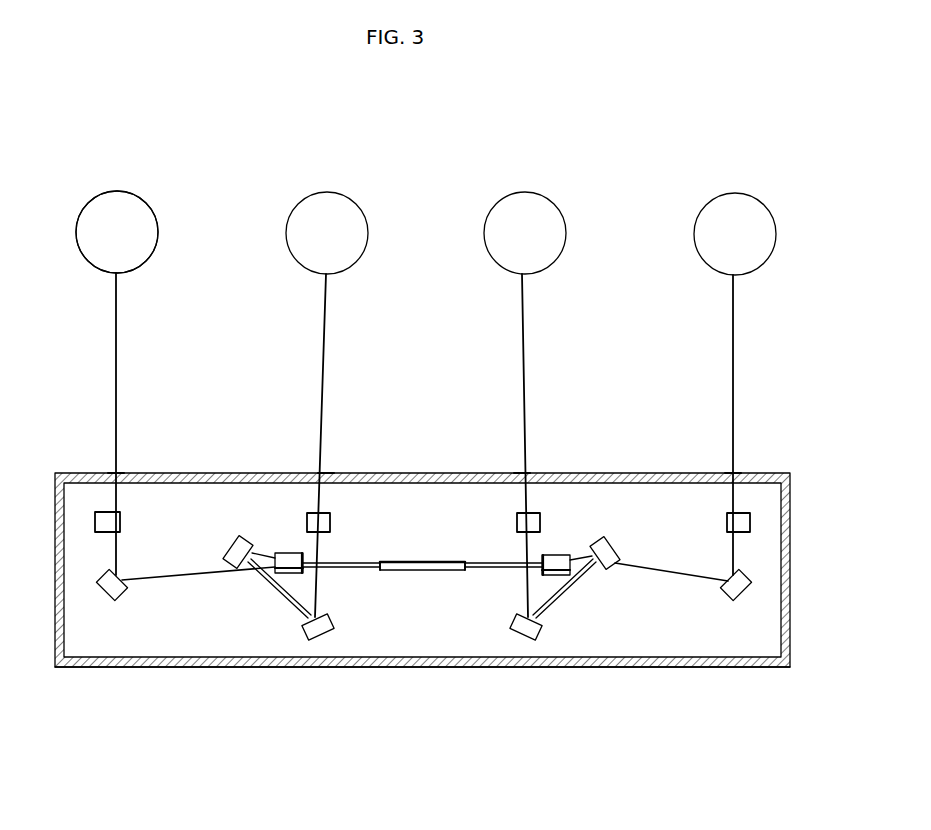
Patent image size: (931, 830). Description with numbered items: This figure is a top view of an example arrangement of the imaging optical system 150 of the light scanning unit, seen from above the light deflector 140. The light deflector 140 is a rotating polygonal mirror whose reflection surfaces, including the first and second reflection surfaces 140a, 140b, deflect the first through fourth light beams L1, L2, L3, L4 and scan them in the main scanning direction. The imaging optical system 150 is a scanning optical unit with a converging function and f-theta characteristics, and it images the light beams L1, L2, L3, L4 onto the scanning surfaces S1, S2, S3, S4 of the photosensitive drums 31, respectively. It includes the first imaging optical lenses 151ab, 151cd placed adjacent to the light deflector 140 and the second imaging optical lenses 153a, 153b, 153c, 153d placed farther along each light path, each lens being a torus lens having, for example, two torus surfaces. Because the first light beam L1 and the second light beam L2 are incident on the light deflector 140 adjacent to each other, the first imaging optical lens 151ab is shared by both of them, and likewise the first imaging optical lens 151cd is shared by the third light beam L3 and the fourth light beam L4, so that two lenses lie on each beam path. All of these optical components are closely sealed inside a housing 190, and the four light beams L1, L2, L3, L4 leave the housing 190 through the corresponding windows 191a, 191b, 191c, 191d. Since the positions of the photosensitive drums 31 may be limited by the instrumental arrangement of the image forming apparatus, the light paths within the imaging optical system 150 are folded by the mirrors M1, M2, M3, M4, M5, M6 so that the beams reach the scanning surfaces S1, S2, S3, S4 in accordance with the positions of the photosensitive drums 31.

The photosensitive drum 31 is at (152, 184).
The scanning surface S1 is at (146, 262).
The scanning surface S2 is at (356, 263).
The scanning surface S3 is at (554, 263).
The scanning surface S4 is at (764, 264).
The first light beam L1 is at (113, 364).
The second light beam L2 is at (323, 364).
The third light beam L3 is at (518, 364).
The fourth light beam L4 is at (512, 572).
The imaging optical system 150 is at (243, 495).
The housing 190 is at (426, 672).
The second imaging optical lens 153a is at (96, 512).
The second imaging optical lens 153b is at (308, 512).
The second imaging optical lens 153c is at (538, 512).
The second imaging optical lens 153d is at (749, 512).
The window 191a is at (118, 475).
The window 191b is at (350, 457).
The window 191c is at (520, 475).
The window 191d is at (731, 476).
The first imaging optical lens 151ab is at (283, 553).
The first imaging optical lens 151cd is at (560, 555).
The light deflector 140 is at (422, 572).
The first reflection surface 140a is at (380, 560).
The second reflection surface 140b is at (465, 560).
The mirror M1 is at (112, 598).
The mirror M2 is at (232, 545).
The mirror M3 is at (317, 645).
The mirror M4 is at (617, 547).
The mirror M5 is at (528, 645).
The mirror M6 is at (736, 600).